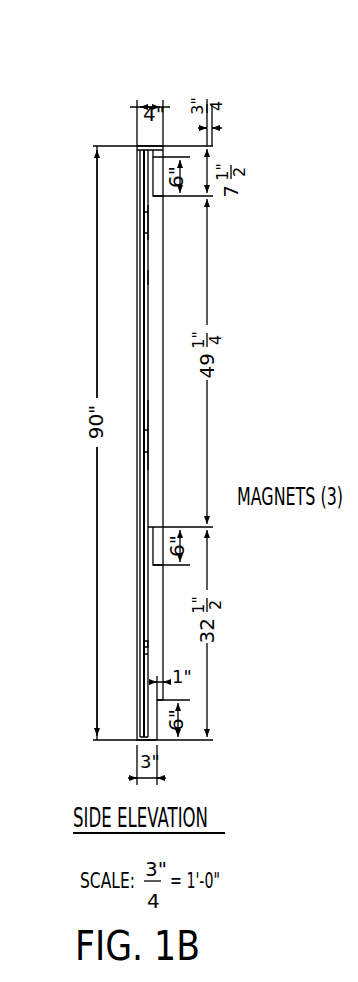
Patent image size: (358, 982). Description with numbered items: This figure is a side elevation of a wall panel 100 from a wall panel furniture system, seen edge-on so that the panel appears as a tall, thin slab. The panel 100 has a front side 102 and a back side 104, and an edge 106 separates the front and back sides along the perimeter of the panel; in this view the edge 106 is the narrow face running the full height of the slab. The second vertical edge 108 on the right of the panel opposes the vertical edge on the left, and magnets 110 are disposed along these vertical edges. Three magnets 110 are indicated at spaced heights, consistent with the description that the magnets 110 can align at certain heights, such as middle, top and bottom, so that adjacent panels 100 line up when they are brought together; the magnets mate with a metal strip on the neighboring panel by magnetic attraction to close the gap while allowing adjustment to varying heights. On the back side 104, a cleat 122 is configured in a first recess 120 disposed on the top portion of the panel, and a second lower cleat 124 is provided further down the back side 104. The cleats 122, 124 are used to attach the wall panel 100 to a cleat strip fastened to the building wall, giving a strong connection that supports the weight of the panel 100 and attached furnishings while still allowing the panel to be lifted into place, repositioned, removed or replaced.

The wall panel 100 is at (153, 400).
The front side 102 is at (134, 321).
The back side 104 is at (174, 304).
The edge 106 is at (156, 418).
The second vertical edge 108 is at (159, 277).
The magnets 110 is at (136, 223).
The first recess 120 is at (166, 195).
The cleat 122 is at (144, 152).
The second lower cleat 124 is at (173, 528).